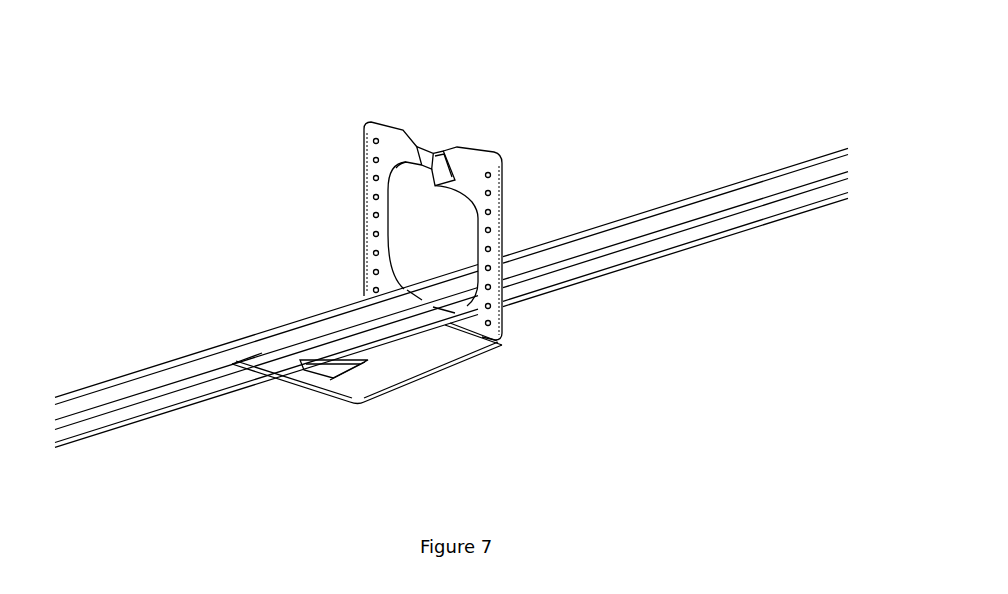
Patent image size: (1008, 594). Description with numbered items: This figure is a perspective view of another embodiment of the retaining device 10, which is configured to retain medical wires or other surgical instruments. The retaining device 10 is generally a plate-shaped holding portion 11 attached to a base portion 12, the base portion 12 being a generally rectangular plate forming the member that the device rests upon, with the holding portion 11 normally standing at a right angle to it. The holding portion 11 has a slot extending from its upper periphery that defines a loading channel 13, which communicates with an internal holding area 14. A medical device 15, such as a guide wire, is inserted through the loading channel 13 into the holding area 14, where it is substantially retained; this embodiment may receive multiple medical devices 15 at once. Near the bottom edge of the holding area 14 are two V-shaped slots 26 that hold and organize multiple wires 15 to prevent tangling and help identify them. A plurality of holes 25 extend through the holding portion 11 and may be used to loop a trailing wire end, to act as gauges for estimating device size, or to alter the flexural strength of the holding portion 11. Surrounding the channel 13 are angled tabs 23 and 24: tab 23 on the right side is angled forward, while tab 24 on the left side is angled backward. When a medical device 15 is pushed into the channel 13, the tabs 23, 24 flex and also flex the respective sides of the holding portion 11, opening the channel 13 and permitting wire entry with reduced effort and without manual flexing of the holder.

The retaining device 10 is at (427, 78).
The holding portion 11 is at (356, 129).
The base portion 12 is at (408, 368).
The loading channel 13 is at (432, 149).
The holding area 14 is at (420, 246).
The medical device 15 is at (736, 233).
The angled tab 23 is at (433, 170).
The angled tab 24 is at (414, 166).
The holes 25 is at (490, 193).
The slots 26 is at (466, 306).